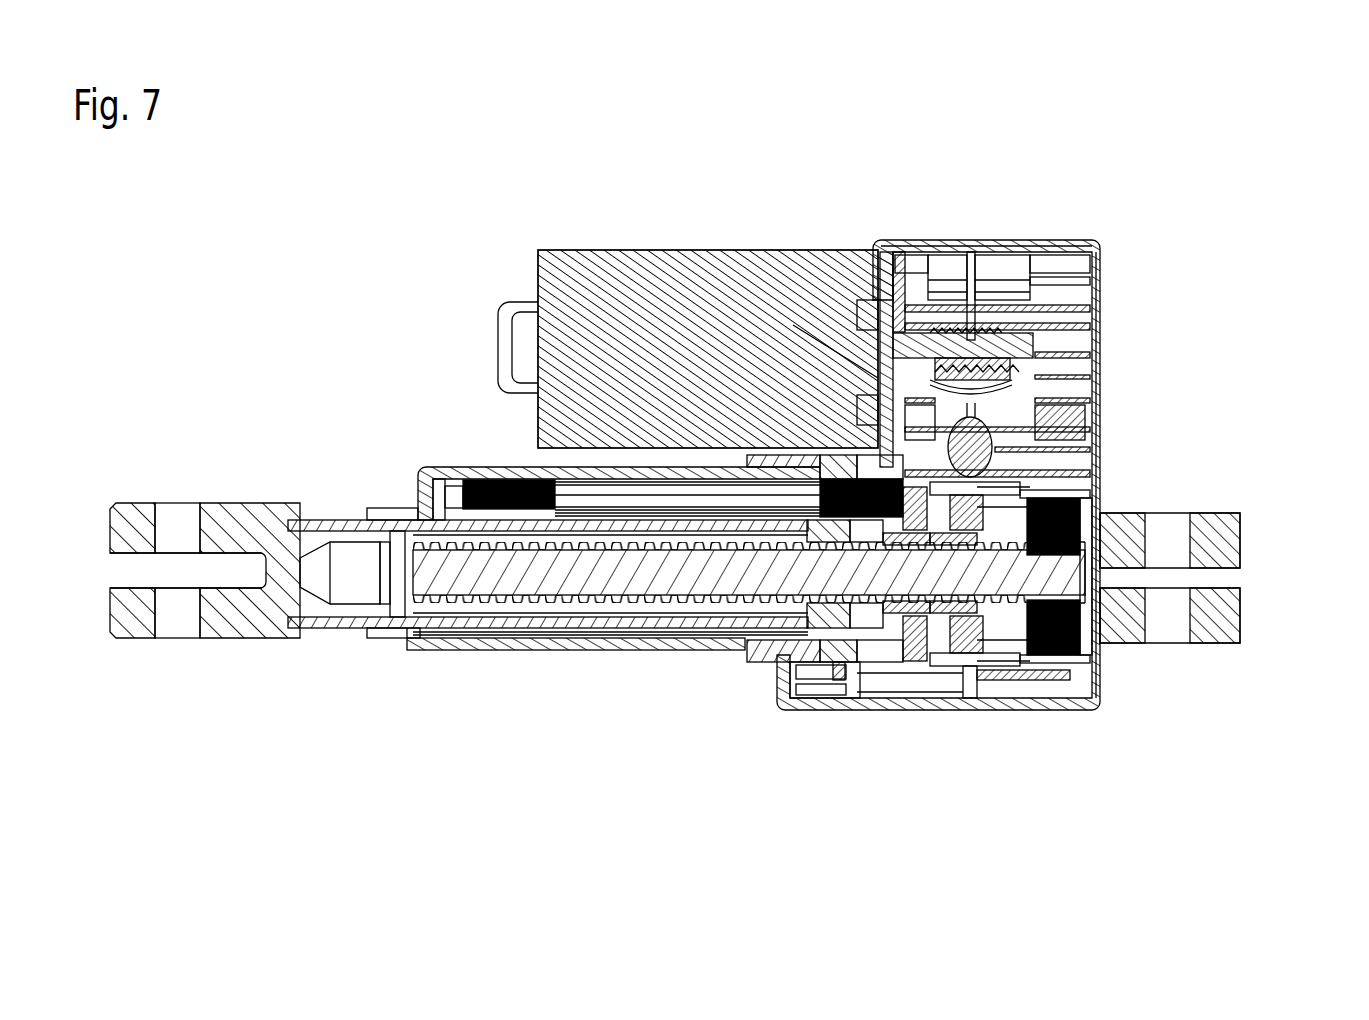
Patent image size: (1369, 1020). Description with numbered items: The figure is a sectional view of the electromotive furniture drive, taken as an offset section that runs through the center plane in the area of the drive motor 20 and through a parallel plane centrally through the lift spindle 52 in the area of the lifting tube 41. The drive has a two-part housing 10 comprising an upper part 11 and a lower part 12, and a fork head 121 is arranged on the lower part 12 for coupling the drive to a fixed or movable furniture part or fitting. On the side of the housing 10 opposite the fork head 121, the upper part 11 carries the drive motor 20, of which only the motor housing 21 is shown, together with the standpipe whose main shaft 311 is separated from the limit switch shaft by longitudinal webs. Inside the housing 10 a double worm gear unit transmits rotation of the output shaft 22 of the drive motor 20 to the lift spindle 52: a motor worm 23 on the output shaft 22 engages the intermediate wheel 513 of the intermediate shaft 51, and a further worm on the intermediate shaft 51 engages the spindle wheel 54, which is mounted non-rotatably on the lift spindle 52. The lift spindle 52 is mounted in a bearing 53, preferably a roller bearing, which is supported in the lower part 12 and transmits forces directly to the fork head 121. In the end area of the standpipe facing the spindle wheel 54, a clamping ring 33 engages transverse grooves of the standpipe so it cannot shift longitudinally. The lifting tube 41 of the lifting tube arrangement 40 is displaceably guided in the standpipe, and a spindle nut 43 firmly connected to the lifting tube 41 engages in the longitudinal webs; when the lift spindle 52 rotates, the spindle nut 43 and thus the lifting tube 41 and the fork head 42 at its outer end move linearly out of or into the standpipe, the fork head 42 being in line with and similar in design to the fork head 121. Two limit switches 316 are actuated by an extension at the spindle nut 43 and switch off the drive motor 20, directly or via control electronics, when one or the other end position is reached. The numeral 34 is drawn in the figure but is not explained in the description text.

The housing 10 is at (1100, 232).
The upper part 11 is at (911, 240).
The lower part 12 is at (1100, 288).
The fork head 121 is at (1202, 633).
The drive motor 20 is at (565, 232).
The motor housing 21 is at (694, 285).
The output shaft 22 is at (1060, 352).
The motor worm 23 is at (985, 330).
The main shaft 311 is at (503, 467).
The limit switches 316 is at (463, 479).
The clamping ring 33 is at (860, 643).
The bearing support 34 is at (912, 647).
The lifting tube arrangement 40 is at (243, 457).
The lifting tube 41 is at (337, 523).
The fork head 42 is at (245, 620).
The spindle nut 43 is at (748, 620).
The intermediate shaft 51 is at (1090, 468).
The intermediate wheel 513 is at (878, 378).
The lift spindle 52 is at (570, 575).
The bearing 53 is at (1055, 653).
The spindle wheel 54 is at (963, 640).